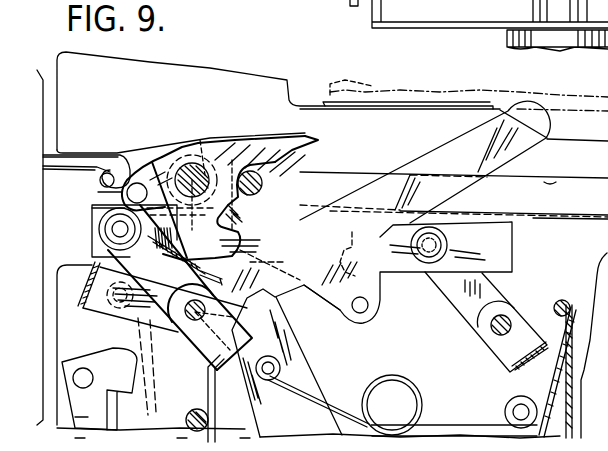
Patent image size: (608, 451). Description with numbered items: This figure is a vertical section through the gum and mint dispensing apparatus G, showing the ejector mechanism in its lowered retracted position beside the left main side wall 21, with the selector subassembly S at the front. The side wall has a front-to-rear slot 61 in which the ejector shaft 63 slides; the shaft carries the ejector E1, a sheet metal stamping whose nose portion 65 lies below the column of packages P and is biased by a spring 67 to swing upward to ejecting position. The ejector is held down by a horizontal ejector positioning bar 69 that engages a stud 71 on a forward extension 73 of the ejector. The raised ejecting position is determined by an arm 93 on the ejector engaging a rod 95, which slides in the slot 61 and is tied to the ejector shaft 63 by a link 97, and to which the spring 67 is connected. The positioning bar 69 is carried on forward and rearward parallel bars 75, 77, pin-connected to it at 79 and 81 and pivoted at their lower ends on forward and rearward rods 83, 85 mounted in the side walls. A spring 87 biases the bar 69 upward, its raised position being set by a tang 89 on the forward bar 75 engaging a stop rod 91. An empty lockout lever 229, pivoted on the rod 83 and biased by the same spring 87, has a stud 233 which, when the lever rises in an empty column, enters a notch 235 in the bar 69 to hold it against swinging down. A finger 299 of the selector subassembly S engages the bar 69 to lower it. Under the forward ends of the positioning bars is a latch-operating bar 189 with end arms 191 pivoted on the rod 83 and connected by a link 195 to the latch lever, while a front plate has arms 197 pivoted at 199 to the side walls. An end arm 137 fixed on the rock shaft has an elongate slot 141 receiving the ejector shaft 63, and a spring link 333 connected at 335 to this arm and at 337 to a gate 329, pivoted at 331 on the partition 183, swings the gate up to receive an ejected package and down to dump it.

The selector subassembly S is at (50, 117).
The left main side wall 21 is at (199, 80).
The gum and mint dispensing apparatus G is at (300, 75).
The package P is at (370, 96).
The front-to-rear slot 61 is at (557, 181).
The empty lockout lever 229 is at (457, 145).
The finger 299 is at (104, 160).
The forward extension 73 is at (148, 166).
The stud 71 is at (126, 195).
The nose portion 65 is at (303, 134).
The ejector E1 is at (310, 138).
The elongate slot 141 is at (196, 162).
The ejector shaft 63 is at (180, 166).
The link 97 is at (232, 160).
The spring 67 is at (250, 236).
The rod 95 is at (266, 184).
The spring 87 is at (224, 247).
The arm 93 is at (256, 245).
The notch 235 is at (355, 247).
The pin connection 79 is at (98, 224).
The ejector positioning bar 69 is at (513, 243).
The pin connection 81 is at (448, 244).
The stud 233 is at (377, 315).
The rearward parallel bar 77 is at (498, 289).
The rearward rod 85 is at (492, 334).
The latch-operating bar 189 is at (98, 290).
The end arm 191 is at (100, 312).
The link 195 is at (138, 334).
The pivot 199 is at (82, 368).
The arm 197 is at (85, 408).
The forward rod 83 is at (210, 327).
The forward parallel bar 75 is at (238, 325).
The tang 89 is at (207, 382).
The stop rod 91 is at (192, 413).
The end arm 137 is at (308, 365).
The connection 335 is at (268, 380).
The spring link 333 is at (393, 377).
The partition 183 is at (549, 388).
The gate 329 is at (567, 336).
The pivot 331 is at (569, 302).
The connection 337 is at (511, 407).